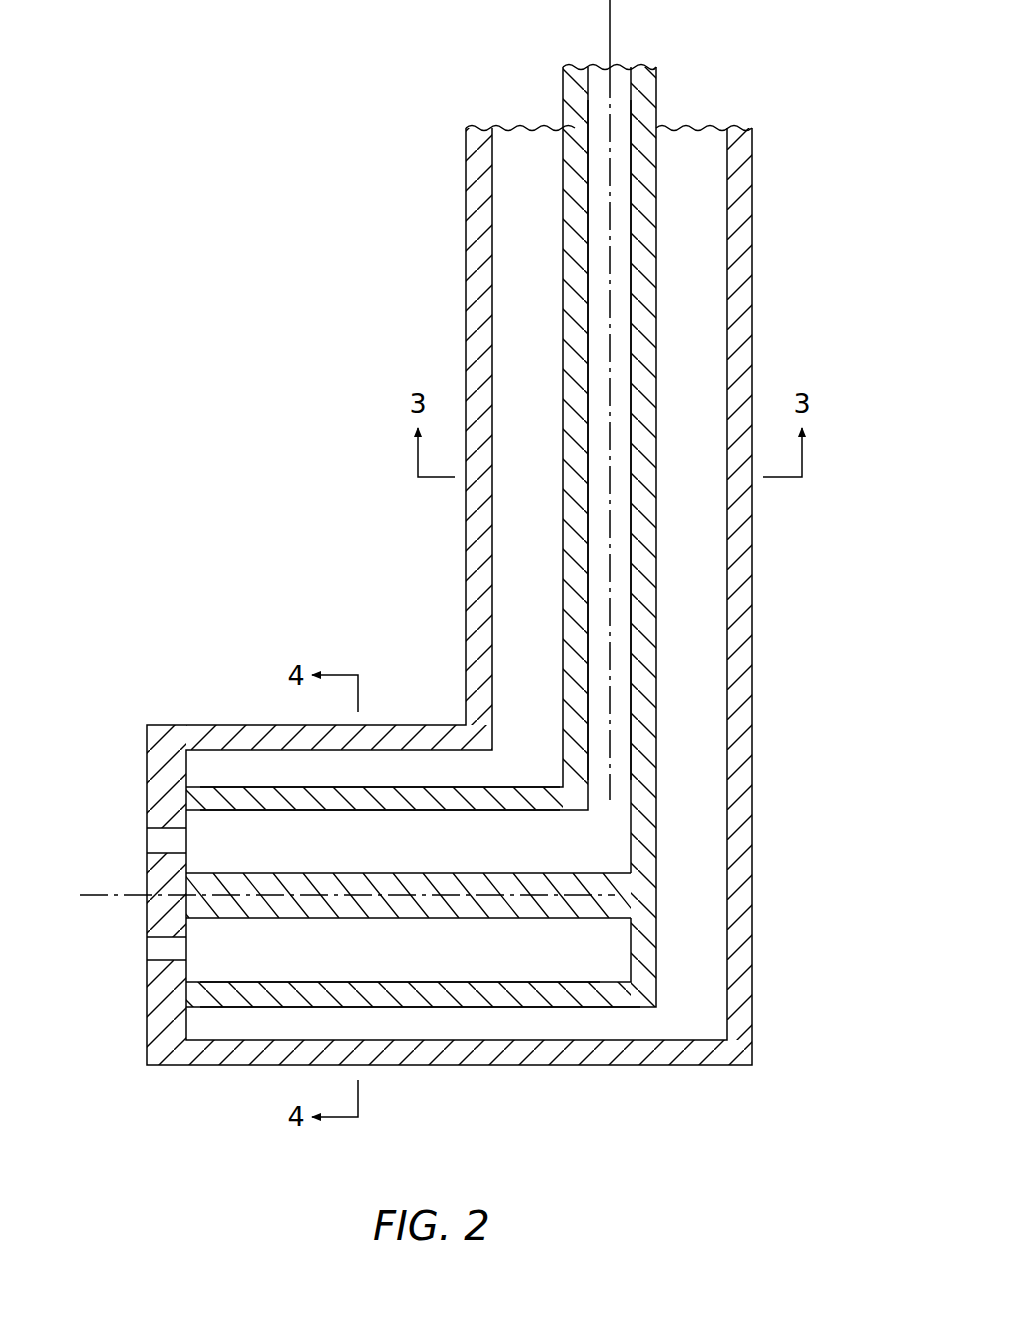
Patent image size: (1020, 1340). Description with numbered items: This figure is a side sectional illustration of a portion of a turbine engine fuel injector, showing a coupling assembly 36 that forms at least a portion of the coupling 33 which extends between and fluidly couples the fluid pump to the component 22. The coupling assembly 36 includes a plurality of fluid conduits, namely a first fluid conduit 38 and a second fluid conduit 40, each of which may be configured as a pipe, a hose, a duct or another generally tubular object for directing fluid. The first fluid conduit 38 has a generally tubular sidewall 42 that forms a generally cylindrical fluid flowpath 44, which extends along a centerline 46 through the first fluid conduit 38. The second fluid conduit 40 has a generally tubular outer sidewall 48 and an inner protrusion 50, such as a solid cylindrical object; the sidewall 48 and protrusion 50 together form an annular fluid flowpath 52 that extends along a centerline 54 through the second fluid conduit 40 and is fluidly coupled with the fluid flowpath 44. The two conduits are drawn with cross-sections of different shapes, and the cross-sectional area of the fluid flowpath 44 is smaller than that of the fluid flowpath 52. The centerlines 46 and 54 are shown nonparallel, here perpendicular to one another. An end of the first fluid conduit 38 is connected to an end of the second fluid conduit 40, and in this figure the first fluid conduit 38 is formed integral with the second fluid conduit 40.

The component 22 is at (143, 786).
The coupling 33 is at (688, 90).
The coupling assembly 36 is at (449, 596).
The first fluid conduit 38 is at (660, 349).
The second fluid conduit 40 is at (514, 1010).
The tubular sidewall 42 is at (641, 610).
The fluid flowpath 44 is at (618, 686).
The centerline 46 is at (607, 32).
The outer sidewall 48 is at (230, 797).
The inner protrusion 50 is at (227, 903).
The fluid flowpath 52 is at (436, 828).
The centerline 54 is at (101, 898).